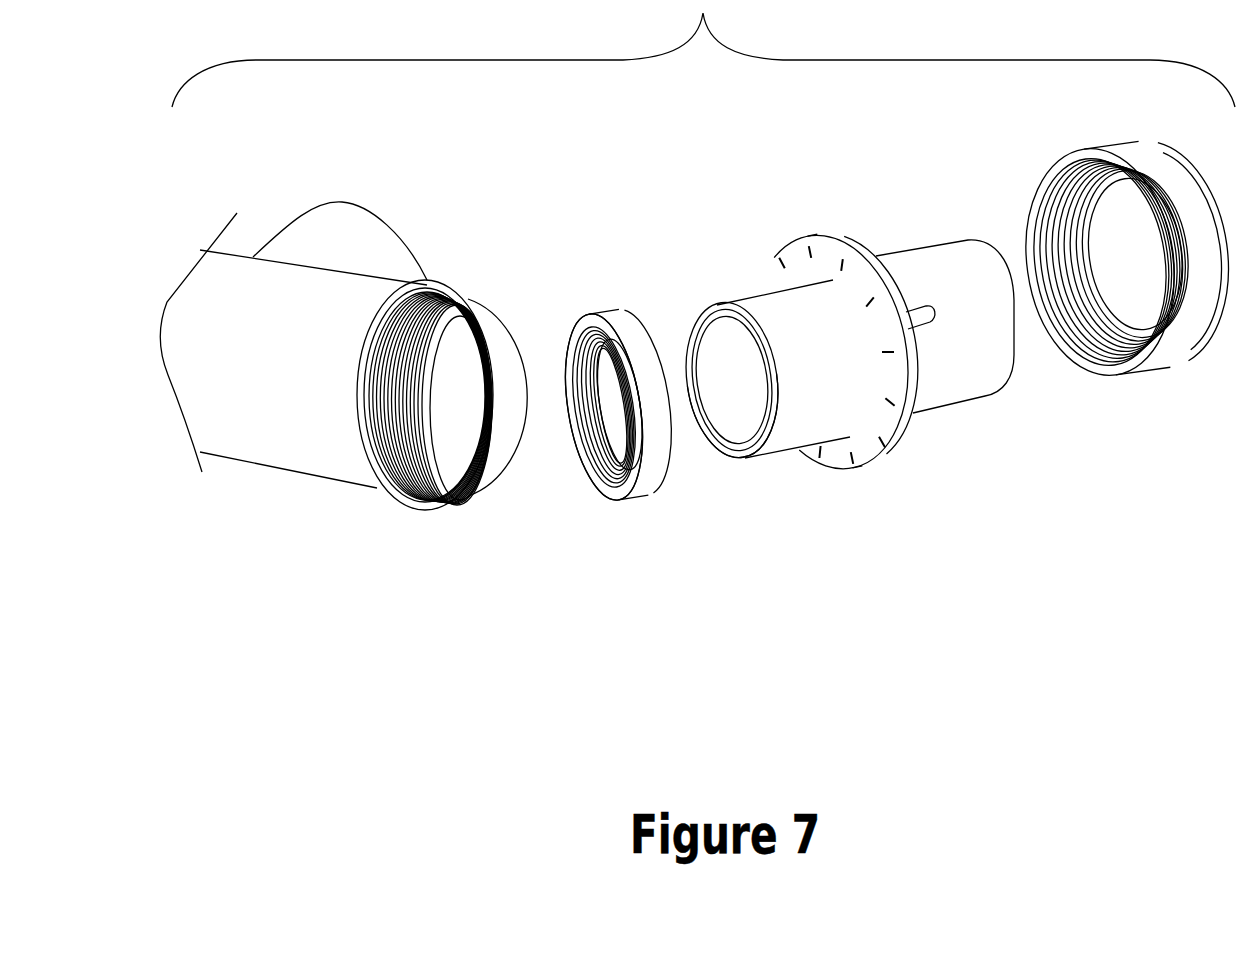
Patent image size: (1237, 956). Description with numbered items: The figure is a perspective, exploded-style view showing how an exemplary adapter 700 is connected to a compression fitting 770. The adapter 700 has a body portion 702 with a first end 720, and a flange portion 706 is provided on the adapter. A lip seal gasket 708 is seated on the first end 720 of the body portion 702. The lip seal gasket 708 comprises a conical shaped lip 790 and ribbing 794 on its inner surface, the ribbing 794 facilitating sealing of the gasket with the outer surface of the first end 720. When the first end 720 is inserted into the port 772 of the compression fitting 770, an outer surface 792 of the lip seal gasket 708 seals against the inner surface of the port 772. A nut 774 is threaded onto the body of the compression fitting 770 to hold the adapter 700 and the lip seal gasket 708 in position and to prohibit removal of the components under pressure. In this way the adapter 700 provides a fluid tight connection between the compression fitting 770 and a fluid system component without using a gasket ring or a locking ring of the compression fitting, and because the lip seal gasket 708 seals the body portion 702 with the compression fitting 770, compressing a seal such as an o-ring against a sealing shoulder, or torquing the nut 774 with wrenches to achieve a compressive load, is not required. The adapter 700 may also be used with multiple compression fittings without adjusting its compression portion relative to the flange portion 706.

The adapter 700 is at (845, 388).
The body portion 702 is at (784, 336).
The flange portion 706 is at (862, 270).
The lip seal gasket 708 is at (627, 512).
The first end 720 is at (771, 468).
The compression fitting 770 is at (333, 522).
The port 772 is at (470, 484).
The nut 774 is at (1170, 398).
The conical shaped lip 790 is at (582, 315).
The outer surface 792 is at (639, 312).
The ribbing 794 is at (588, 489).